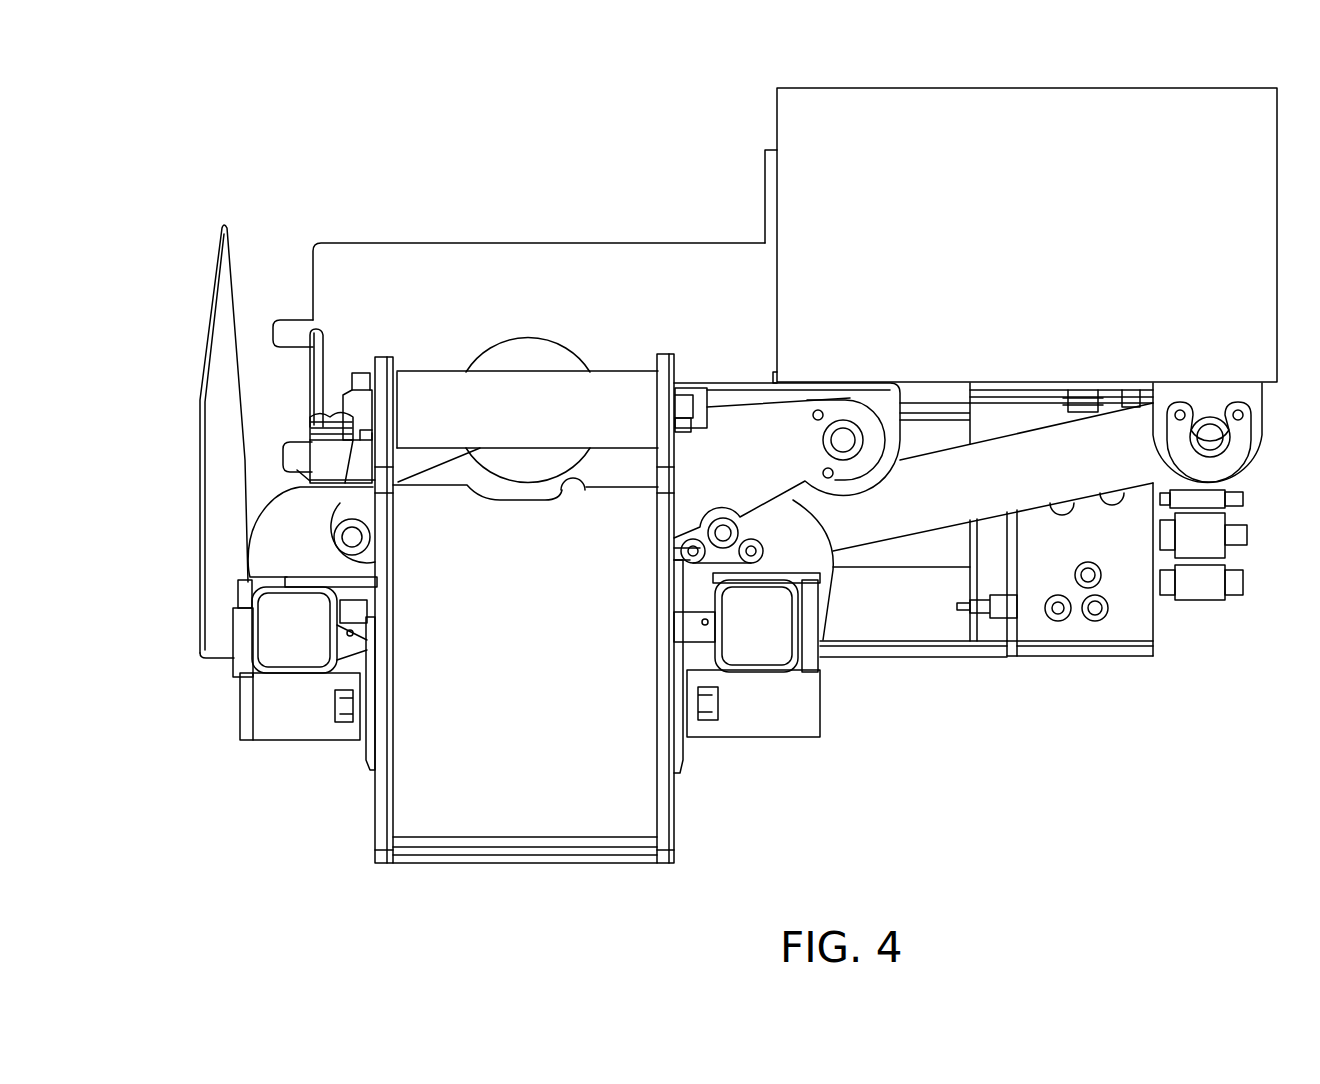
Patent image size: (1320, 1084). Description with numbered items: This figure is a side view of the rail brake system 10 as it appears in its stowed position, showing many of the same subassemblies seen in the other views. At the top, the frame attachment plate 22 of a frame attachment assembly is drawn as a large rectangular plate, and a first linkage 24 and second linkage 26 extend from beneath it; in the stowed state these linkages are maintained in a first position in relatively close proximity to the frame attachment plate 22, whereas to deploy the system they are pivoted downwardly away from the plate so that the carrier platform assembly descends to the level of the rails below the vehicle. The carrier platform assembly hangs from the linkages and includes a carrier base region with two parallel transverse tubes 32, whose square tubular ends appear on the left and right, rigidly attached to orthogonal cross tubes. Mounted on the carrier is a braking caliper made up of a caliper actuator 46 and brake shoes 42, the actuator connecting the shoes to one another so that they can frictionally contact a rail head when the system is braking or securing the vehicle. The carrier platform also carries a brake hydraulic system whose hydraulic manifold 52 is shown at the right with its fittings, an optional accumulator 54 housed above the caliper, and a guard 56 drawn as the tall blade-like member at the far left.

The rail brake system 10 is at (280, 104).
The frame attachment plate 22 is at (1095, 128).
The first linkage 24 is at (765, 437).
The second linkage 26 is at (1003, 467).
The transverse tubes 32 is at (270, 642).
The brake shoes 42 is at (507, 813).
The caliper actuator 46 is at (525, 353).
The hydraulic manifold 52 is at (1133, 553).
The accumulator 54 is at (587, 277).
The guard 56 is at (216, 398).